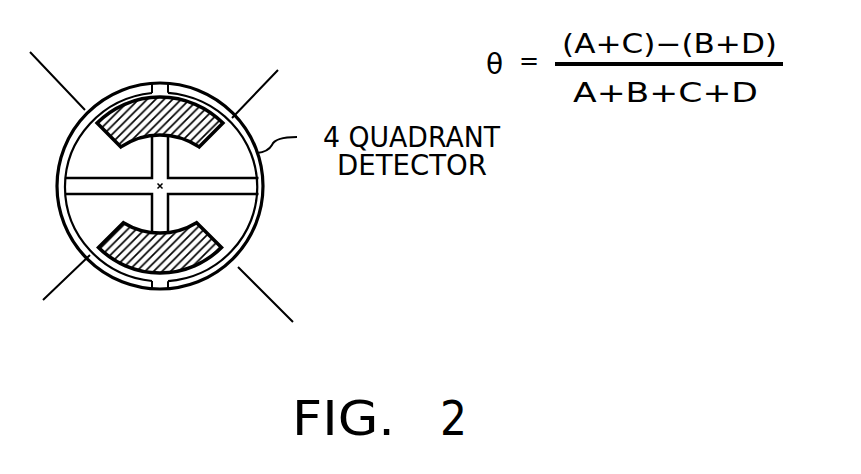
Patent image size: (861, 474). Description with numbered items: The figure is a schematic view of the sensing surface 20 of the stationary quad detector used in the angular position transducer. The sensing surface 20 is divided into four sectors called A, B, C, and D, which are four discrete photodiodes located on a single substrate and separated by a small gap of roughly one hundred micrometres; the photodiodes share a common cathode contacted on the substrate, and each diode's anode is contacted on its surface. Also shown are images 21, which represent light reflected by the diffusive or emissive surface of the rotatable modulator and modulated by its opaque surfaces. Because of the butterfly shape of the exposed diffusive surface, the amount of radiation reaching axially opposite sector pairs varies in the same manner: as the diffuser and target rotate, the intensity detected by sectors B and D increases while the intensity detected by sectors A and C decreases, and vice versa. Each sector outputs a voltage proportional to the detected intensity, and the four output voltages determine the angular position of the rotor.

The sensing surface 20 is at (246, 187).
The images 21 is at (193, 97).
The sector A is at (143, 170).
The sector B is at (177, 170).
The sector C is at (213, 213).
The sector D is at (143, 203).